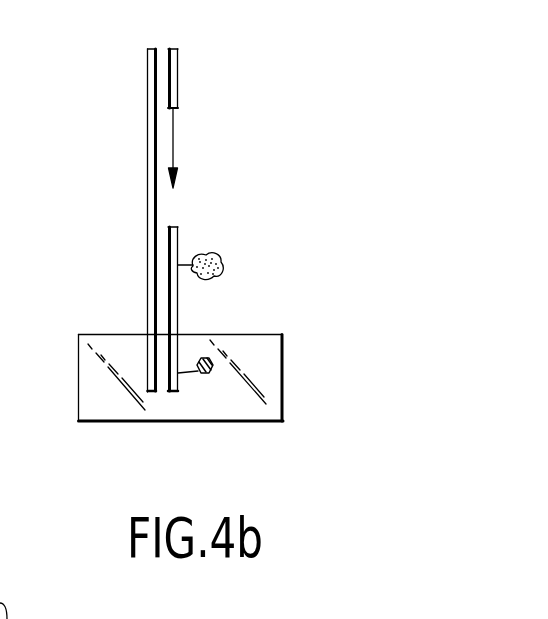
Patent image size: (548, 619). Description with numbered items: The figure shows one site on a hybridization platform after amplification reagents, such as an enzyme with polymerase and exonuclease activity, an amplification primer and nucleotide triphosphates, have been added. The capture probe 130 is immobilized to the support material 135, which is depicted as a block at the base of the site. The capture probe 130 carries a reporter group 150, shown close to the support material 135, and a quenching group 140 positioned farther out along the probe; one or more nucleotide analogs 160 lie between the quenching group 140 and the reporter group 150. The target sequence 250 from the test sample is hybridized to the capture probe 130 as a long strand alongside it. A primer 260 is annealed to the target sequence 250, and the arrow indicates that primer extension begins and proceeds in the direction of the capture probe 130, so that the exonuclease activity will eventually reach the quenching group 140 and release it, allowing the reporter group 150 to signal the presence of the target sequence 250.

The capture probe 130 is at (338, 290).
The support material 135 is at (98, 412).
The quenching group 140 is at (222, 262).
The reporter group 150 is at (212, 362).
The nucleotide analogs 160 is at (178, 322).
The target sequence 250 is at (147, 121).
The movable electrode tip 260 is at (178, 73).